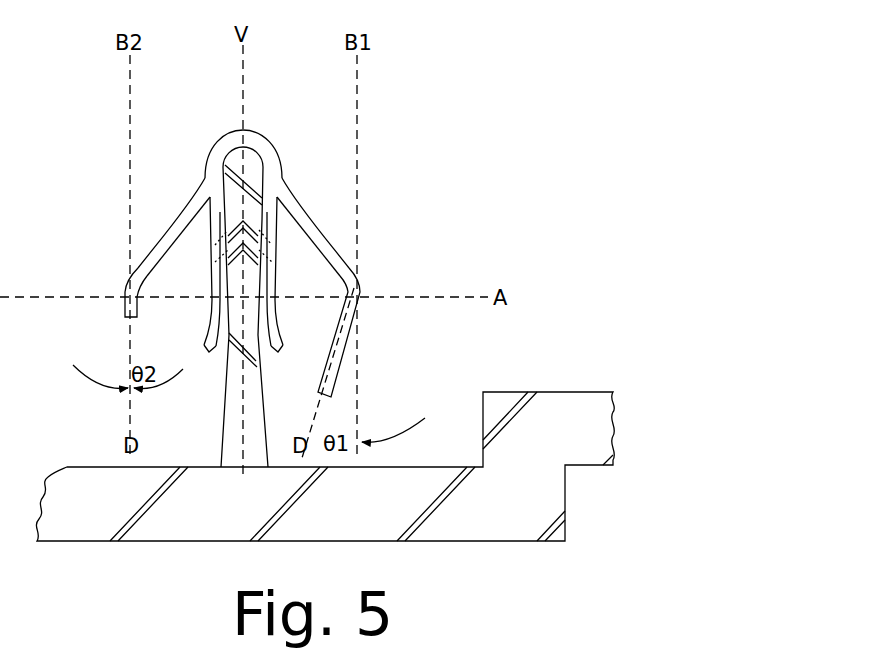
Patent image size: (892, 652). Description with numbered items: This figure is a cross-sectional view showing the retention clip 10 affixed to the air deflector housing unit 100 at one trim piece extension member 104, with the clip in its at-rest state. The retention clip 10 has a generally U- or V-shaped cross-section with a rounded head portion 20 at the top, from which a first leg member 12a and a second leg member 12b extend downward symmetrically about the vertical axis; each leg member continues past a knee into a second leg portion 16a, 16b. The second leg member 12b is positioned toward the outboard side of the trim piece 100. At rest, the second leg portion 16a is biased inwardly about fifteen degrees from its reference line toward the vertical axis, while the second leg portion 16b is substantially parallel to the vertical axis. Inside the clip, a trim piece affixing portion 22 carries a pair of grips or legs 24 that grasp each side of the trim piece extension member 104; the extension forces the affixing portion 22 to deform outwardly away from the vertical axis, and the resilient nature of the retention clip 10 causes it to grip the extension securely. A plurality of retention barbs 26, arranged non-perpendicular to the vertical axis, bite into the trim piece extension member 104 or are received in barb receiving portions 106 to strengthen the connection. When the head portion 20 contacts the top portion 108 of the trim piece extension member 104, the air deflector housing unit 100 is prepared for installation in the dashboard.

The retention clip 10 is at (272, 86).
The first leg member 12a is at (348, 242).
The second leg member 12b is at (157, 233).
The second leg portion 16a is at (351, 345).
The second leg portion 16b is at (124, 296).
The head portion 20 is at (235, 128).
The trim piece affixing portion 22 is at (207, 305).
The grips or legs 24 is at (211, 342).
The retention barbs 26 is at (215, 241).
The air deflector housing unit 100 is at (462, 512).
The trim piece extension member 104 is at (238, 400).
The barb receiving portions 106 is at (257, 352).
The top portion 108 is at (255, 157).